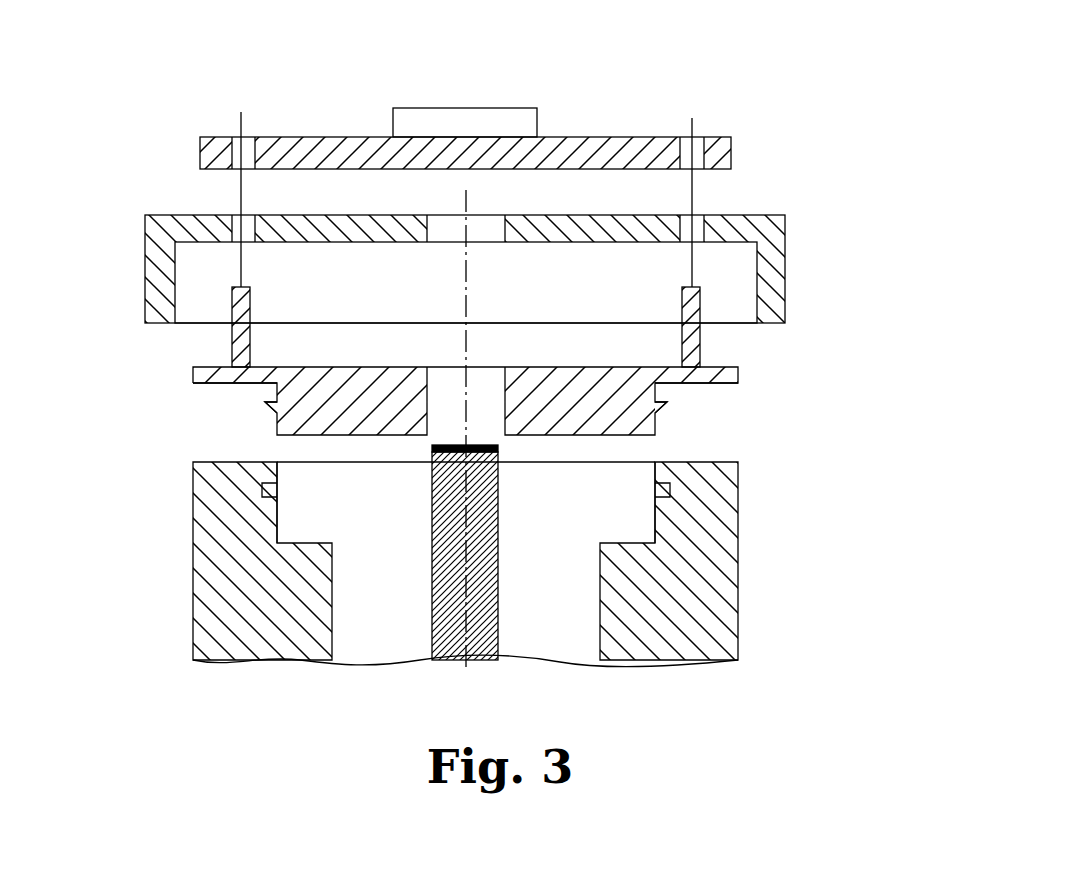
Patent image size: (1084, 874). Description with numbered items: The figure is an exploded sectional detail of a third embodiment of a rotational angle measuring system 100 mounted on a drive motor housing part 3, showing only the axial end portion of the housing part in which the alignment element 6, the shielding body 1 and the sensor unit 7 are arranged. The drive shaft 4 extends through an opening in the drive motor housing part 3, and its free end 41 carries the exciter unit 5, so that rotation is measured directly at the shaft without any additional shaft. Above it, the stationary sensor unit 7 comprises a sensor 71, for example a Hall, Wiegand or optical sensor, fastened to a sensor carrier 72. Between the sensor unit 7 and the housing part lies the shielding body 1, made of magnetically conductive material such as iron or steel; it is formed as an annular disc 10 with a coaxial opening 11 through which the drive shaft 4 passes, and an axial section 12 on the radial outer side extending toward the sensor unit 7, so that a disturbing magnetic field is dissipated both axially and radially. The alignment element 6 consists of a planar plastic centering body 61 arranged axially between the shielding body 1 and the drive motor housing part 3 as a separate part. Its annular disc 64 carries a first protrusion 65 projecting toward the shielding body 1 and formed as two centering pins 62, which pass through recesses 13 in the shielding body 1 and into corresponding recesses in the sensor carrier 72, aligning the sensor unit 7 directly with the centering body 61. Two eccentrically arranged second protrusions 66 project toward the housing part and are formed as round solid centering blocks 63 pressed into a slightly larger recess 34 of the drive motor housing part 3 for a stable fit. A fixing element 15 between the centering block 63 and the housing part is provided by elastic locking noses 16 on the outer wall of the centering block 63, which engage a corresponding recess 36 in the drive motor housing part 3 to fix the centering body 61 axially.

The rotational angle measuring system 100 is at (887, 244).
The shielding body 1 is at (467, 195).
The annular disc 10 is at (170, 215).
The coaxial opening 11 is at (445, 210).
The axial section 12 is at (770, 283).
The recess 13 is at (237, 235).
The sensor unit 7 is at (465, 91).
The sensor 71 is at (452, 122).
The sensor carrier 72 is at (636, 146).
The centering pins 62 is at (557, 239).
The first protrusion 65 is at (285, 300).
The alignment element 6 is at (491, 350).
The centering body 61 is at (386, 395).
The centering block 63 is at (592, 420).
The annular disc 64 is at (665, 375).
The locking noses 16 is at (272, 402).
The fixing element 15 is at (255, 428).
The second protrusions 66 is at (680, 423).
The drive motor housing part 3 is at (462, 548).
The recess 34 is at (613, 500).
The recess 36 is at (280, 496).
The free end 41 is at (390, 485).
The drive shaft 4 is at (304, 541).
The exciter unit 5 is at (447, 445).